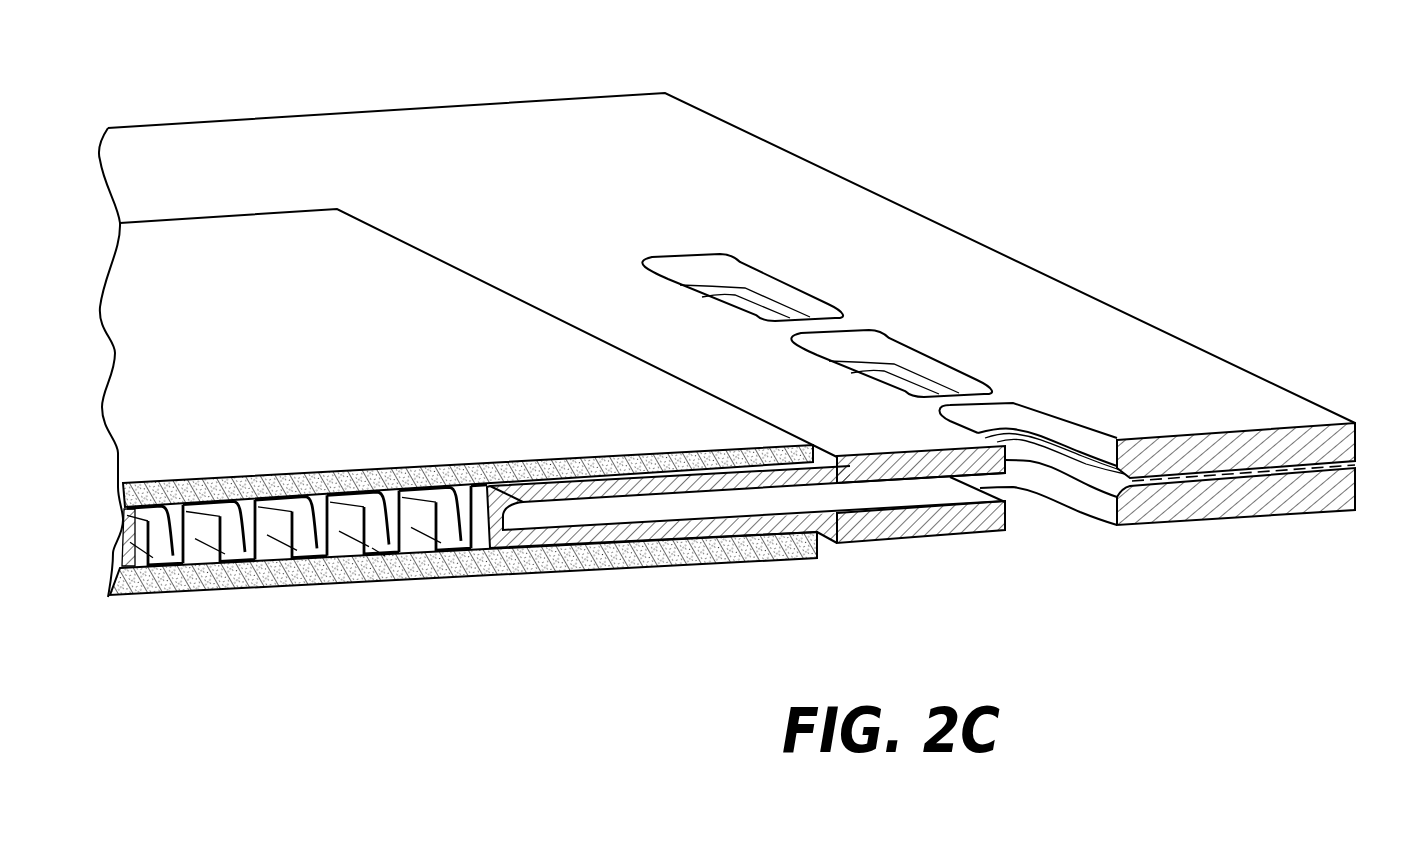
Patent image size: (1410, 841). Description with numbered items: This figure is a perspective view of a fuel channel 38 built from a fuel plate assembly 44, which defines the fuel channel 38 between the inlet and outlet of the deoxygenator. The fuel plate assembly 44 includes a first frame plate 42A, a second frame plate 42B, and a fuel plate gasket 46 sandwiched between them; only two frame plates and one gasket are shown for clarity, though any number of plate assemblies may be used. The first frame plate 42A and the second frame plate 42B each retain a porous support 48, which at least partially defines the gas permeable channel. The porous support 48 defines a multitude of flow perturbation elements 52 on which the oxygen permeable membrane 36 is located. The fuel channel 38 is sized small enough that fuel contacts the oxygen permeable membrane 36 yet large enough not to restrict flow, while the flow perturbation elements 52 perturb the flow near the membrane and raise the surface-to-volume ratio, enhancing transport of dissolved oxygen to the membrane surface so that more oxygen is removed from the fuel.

The fuel plate assembly 44 is at (882, 114).
The first frame plate 42A is at (1097, 313).
The second frame plate 42B is at (1242, 502).
The fuel plate gasket 46 is at (1350, 465).
The porous support 48 is at (308, 490).
The fuel channel 38 is at (745, 503).
The oxygen permeable membrane 36 is at (203, 497).
The flow perturbation elements 52 is at (368, 542).